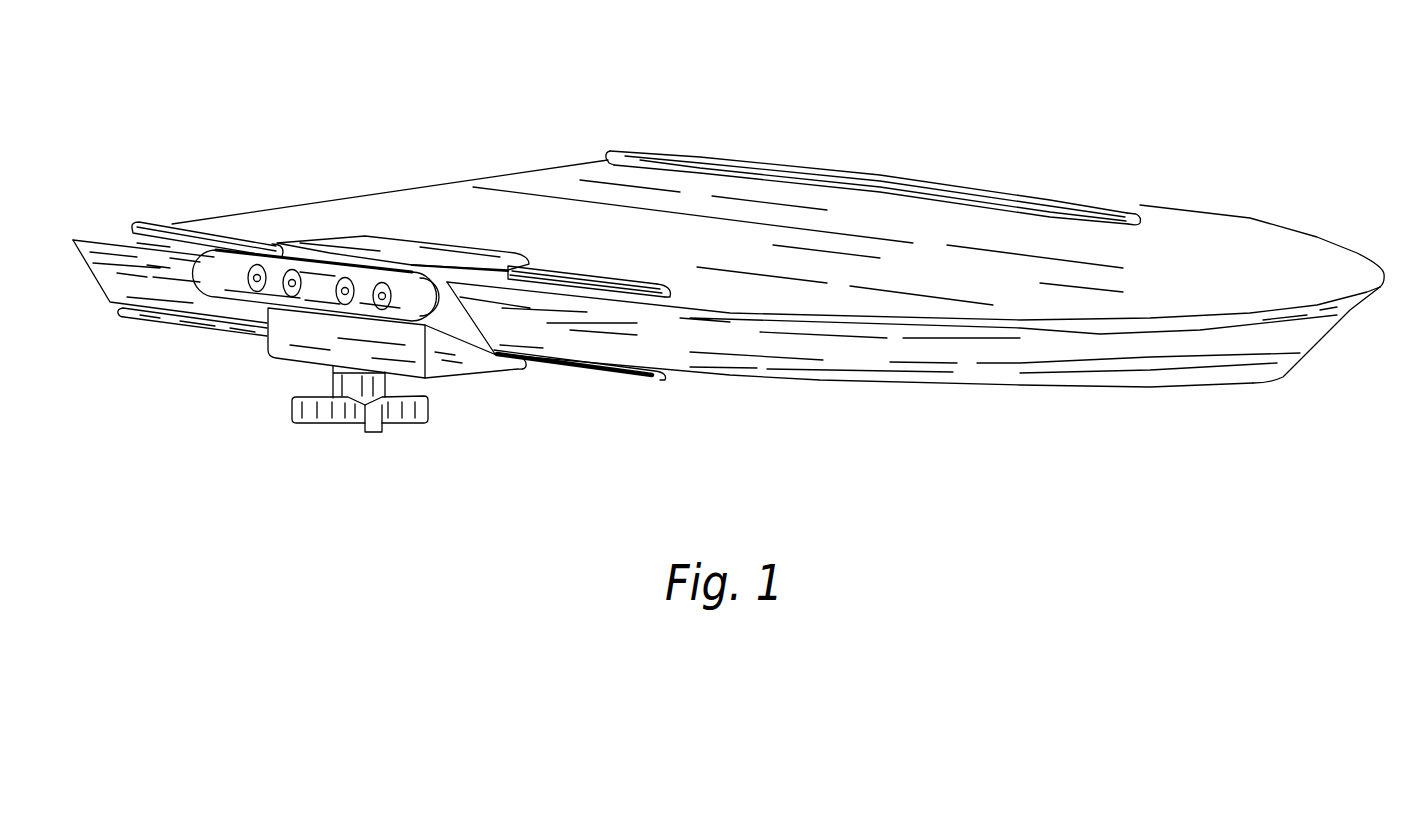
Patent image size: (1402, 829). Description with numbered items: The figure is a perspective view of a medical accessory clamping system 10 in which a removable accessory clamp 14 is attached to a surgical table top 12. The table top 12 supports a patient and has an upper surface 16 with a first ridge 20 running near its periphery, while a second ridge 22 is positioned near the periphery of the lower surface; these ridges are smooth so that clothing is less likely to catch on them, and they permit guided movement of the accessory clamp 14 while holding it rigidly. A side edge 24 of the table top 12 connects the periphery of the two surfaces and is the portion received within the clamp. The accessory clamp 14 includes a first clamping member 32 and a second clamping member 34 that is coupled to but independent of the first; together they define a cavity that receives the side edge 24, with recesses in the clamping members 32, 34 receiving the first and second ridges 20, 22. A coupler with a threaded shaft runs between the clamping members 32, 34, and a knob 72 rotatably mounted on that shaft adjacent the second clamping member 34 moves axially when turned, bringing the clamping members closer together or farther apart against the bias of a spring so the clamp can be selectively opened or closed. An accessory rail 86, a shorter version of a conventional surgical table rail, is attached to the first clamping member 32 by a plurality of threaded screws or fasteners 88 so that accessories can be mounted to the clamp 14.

The medical accessory clamping system 10 is at (728, 318).
The table top 12 is at (728, 257).
The accessory clamp 14 is at (336, 311).
The upper surface 16 is at (1211, 231).
The first ridge 20 is at (1047, 200).
The second ridge 22 is at (623, 378).
The side edge 24 is at (1317, 347).
The first clamping member 32 is at (328, 258).
The second clamping member 34 is at (460, 354).
The knob 72 is at (338, 424).
The accessory rail 86 is at (218, 274).
The fasteners 88 is at (292, 291).